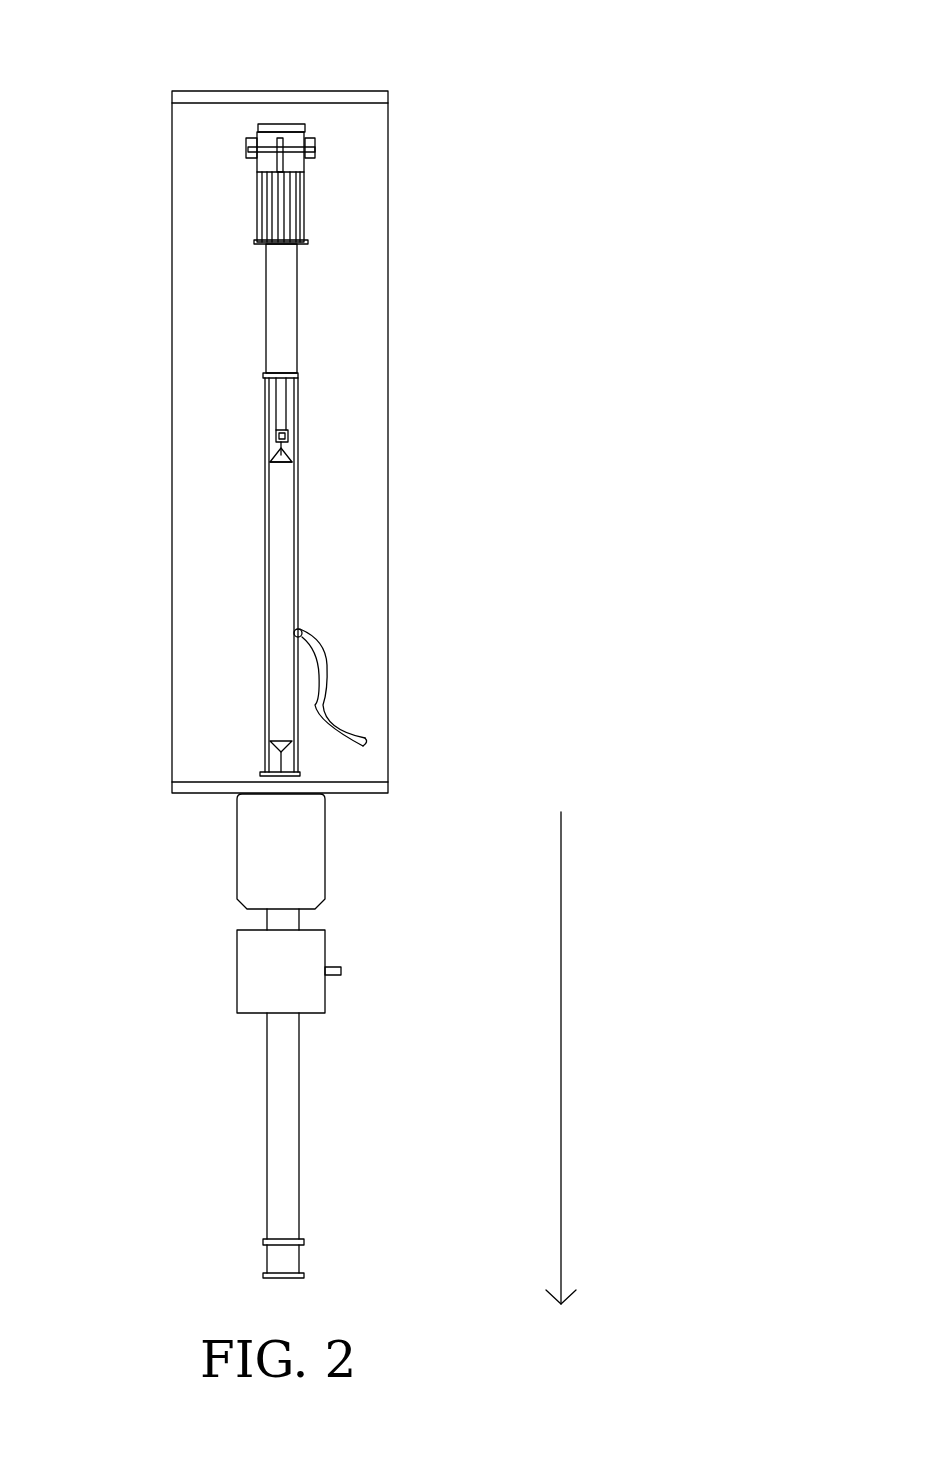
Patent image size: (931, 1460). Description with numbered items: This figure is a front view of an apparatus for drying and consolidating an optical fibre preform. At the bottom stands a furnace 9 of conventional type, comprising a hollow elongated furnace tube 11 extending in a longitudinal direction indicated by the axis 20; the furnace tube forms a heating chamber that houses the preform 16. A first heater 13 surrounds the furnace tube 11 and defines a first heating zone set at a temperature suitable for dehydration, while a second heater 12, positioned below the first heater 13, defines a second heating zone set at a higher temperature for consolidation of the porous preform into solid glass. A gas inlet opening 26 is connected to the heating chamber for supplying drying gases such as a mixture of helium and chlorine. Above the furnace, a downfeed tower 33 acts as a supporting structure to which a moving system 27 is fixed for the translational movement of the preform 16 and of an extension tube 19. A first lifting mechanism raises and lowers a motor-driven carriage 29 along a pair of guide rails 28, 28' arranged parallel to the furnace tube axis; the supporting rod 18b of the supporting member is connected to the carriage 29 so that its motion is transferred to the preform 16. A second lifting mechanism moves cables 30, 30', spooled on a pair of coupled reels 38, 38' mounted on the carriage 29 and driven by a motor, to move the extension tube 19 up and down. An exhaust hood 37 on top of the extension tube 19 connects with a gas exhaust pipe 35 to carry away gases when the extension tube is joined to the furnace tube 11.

The furnace 9 is at (156, 988).
The furnace tube 11 is at (300, 1127).
The second heater 12 is at (325, 988).
The first heater 13 is at (325, 858).
The preform 16 is at (281, 585).
The supporting rod 18b is at (280, 401).
The extension tube 19 is at (297, 322).
The axis 20 is at (561, 1270).
The gas inlet opening 26 is at (297, 1266).
The moving system 27 is at (316, 185).
The guide rail 28 is at (201, 434).
The guide rail 28' is at (361, 428).
The carriage 29 is at (270, 142).
The cable 30 is at (187, 187).
The cable 30' is at (371, 207).
The downfeed tower 33 is at (377, 128).
The gas exhaust pipe 35 is at (330, 706).
The exhaust hood 37 is at (307, 243).
The reel 38 is at (192, 155).
The reel 38' is at (300, 93).